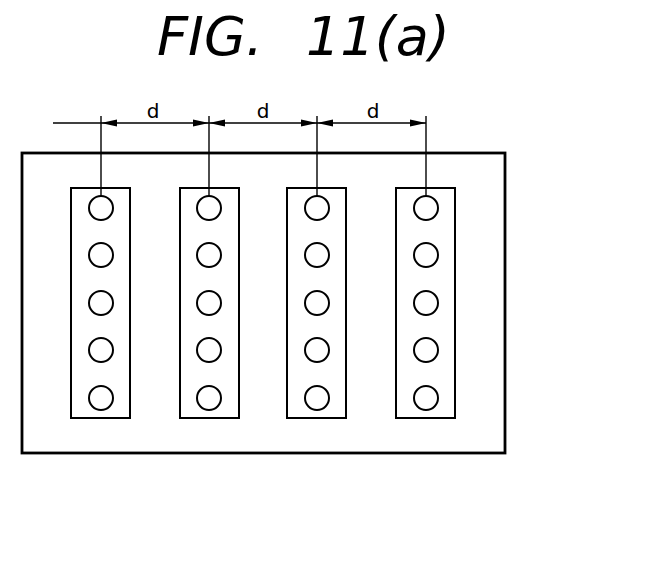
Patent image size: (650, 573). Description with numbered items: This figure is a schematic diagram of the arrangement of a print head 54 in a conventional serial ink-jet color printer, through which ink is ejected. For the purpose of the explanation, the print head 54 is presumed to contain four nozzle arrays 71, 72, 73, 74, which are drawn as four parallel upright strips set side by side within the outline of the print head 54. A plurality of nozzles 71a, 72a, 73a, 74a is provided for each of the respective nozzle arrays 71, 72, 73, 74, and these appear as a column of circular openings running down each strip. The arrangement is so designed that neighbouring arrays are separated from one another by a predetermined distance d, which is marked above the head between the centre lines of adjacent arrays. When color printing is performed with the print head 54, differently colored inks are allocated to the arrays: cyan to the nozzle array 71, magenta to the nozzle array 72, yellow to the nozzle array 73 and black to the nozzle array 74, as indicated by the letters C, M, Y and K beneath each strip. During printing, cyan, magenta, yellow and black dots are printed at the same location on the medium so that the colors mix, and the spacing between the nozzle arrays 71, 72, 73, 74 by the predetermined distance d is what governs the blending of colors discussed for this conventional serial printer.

The print head 54 is at (497, 183).
The nozzle array 71 is at (82, 410).
The nozzles 71a is at (97, 199).
The nozzle array 72 is at (191, 410).
The nozzles 72a is at (205, 199).
The nozzle array 73 is at (299, 410).
The nozzles 73a is at (313, 199).
The nozzle array 74 is at (406, 410).
The nozzles 74a is at (422, 199).